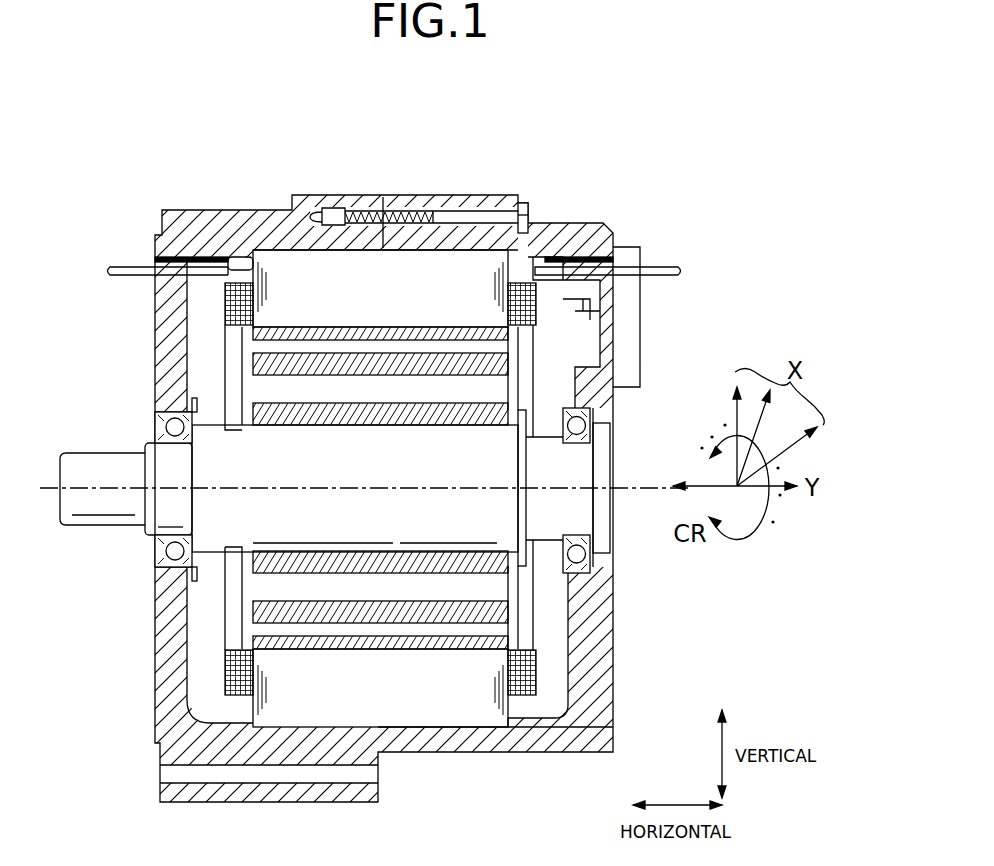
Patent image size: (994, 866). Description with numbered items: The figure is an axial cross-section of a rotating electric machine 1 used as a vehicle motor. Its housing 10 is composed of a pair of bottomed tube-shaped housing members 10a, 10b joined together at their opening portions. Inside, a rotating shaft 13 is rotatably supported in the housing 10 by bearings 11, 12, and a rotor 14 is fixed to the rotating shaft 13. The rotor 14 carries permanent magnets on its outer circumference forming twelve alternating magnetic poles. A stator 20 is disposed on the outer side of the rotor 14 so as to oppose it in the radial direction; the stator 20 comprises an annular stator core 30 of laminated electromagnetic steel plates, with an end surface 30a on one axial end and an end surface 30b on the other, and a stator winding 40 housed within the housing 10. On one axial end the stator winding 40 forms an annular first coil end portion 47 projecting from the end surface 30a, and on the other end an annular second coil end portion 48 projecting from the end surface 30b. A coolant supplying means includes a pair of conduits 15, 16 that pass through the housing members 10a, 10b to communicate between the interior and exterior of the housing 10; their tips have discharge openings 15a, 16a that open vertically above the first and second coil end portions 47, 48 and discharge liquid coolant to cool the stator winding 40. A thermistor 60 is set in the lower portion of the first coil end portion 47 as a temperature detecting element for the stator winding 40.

The rotating electric machine 1 is at (660, 138).
The housing 10 is at (436, 75).
The housing member 10a is at (310, 195).
The housing member 10b is at (403, 205).
The bearing 11 is at (160, 404).
The bearing 12 is at (613, 408).
The rotating shaft 13 is at (107, 507).
The rotor 14 is at (493, 362).
The conduit 15 is at (660, 267).
The discharge opening 15a is at (538, 250).
The conduit 16 is at (132, 268).
The discharge opening 16a is at (247, 262).
The stator 20 is at (428, 730).
The stator core 30 is at (477, 713).
The end surface 30a is at (508, 708).
The end surface 30b is at (240, 712).
The stator winding 40 is at (535, 665).
The first coil end portion 47 is at (535, 312).
The second coil end portion 48 is at (225, 313).
The thermistor 60 is at (535, 687).